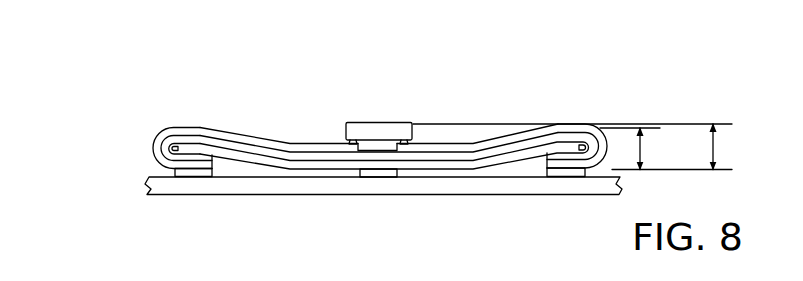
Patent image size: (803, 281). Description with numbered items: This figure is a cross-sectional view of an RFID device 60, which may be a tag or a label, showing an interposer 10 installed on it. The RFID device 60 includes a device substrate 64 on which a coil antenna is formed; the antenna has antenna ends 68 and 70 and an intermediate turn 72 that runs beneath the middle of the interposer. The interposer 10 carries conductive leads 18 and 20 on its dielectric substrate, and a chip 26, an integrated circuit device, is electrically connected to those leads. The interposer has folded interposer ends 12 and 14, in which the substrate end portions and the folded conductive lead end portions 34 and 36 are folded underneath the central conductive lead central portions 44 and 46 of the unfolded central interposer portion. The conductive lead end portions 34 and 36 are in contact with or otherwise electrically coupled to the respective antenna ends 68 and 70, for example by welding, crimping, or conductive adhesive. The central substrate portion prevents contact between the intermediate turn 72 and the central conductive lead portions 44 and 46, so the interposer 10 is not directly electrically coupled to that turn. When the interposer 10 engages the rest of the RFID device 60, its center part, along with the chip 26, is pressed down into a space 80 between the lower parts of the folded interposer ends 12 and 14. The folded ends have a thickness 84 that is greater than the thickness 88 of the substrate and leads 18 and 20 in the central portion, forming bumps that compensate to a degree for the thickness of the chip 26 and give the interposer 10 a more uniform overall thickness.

The interposer 10 is at (226, 80).
The folded interposer end 12 is at (140, 139).
The folded interposer end 14 is at (602, 124).
The conductive lead 18 is at (175, 118).
The conductive lead 20 is at (565, 121).
The chip 26 is at (413, 116).
The folded conductive lead end portion 34 is at (211, 168).
The folded conductive lead end portion 36 is at (549, 173).
The conductive lead central portion 44 is at (318, 140).
The conductive lead central portion 46 is at (460, 143).
The RFID device 60 is at (134, 95).
The device substrate 64 is at (147, 190).
The antenna end 68 is at (188, 176).
The antenna end 70 is at (568, 176).
The intermediate turn 72 is at (377, 172).
The space 80 is at (444, 133).
The thickness 84 is at (581, 147).
The thickness 88 is at (637, 149).